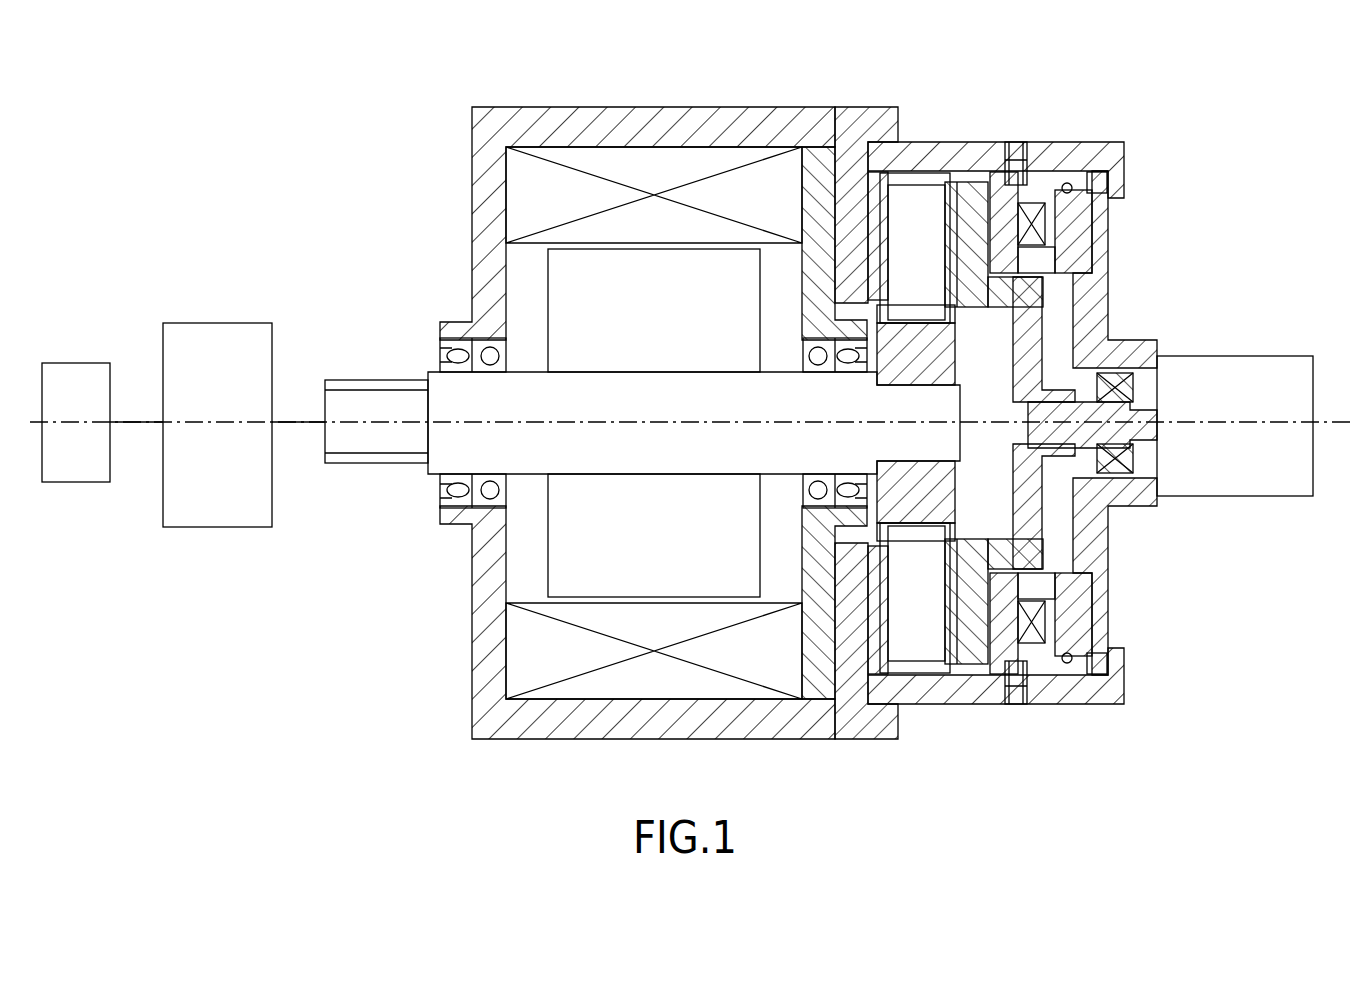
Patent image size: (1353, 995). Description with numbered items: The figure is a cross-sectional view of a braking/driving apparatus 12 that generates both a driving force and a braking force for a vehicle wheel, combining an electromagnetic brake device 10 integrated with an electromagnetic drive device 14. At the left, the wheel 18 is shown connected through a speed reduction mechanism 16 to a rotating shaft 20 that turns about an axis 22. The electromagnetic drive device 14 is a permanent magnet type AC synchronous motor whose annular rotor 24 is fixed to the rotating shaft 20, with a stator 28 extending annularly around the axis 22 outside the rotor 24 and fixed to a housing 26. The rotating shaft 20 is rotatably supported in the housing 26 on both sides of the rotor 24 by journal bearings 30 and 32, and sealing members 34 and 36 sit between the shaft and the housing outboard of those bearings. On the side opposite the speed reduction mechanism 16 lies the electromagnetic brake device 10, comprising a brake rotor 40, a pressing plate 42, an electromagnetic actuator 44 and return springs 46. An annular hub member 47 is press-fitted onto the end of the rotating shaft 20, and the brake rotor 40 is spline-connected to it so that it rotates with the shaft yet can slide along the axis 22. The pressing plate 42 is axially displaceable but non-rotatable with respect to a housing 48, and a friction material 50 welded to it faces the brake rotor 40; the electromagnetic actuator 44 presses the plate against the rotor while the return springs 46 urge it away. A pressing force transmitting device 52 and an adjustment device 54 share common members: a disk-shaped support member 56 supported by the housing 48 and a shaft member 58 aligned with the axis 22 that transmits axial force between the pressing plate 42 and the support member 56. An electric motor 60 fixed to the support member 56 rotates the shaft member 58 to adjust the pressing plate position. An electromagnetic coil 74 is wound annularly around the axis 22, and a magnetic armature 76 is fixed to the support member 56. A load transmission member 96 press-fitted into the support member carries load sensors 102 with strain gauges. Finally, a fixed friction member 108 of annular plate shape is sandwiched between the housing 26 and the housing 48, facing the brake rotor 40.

The electromagnetic brake device 10 is at (1099, 121).
The braking/driving apparatus 12 is at (437, 71).
The electromagnetic drive device 14 is at (756, 95).
The speed reduction mechanism 16 is at (222, 323).
The wheel 18 is at (75, 363).
The rotating shaft 20 is at (633, 386).
The axis 22 is at (370, 420).
The rotor 24 is at (660, 490).
The housing 26 is at (570, 112).
The stator 28 is at (678, 165).
The journal bearing 30 is at (497, 355).
The journal bearing 32 is at (803, 356).
The sealing member 34 is at (438, 485).
The sealing member 36 is at (817, 495).
The brake rotor 40 is at (918, 197).
The pressing plate 42 is at (990, 170).
The electromagnetic actuator 44 is at (1106, 222).
The return springs 46 is at (1098, 262).
The hub member 47 is at (905, 483).
The housing 48 is at (1075, 706).
The friction material 50 is at (985, 667).
The pressing force transmitting device 52 is at (1132, 313).
The adjustment device 54 is at (1172, 514).
The support member 56 is at (1103, 600).
The shaft member 58 is at (1027, 440).
The electric motor 60 is at (1280, 356).
The electromagnetic coil 74 is at (1030, 200).
The armature 76 is at (1089, 637).
The load transmission member 96 is at (1120, 372).
The load sensors 102 is at (1135, 455).
The fixed friction member 108 is at (835, 203).